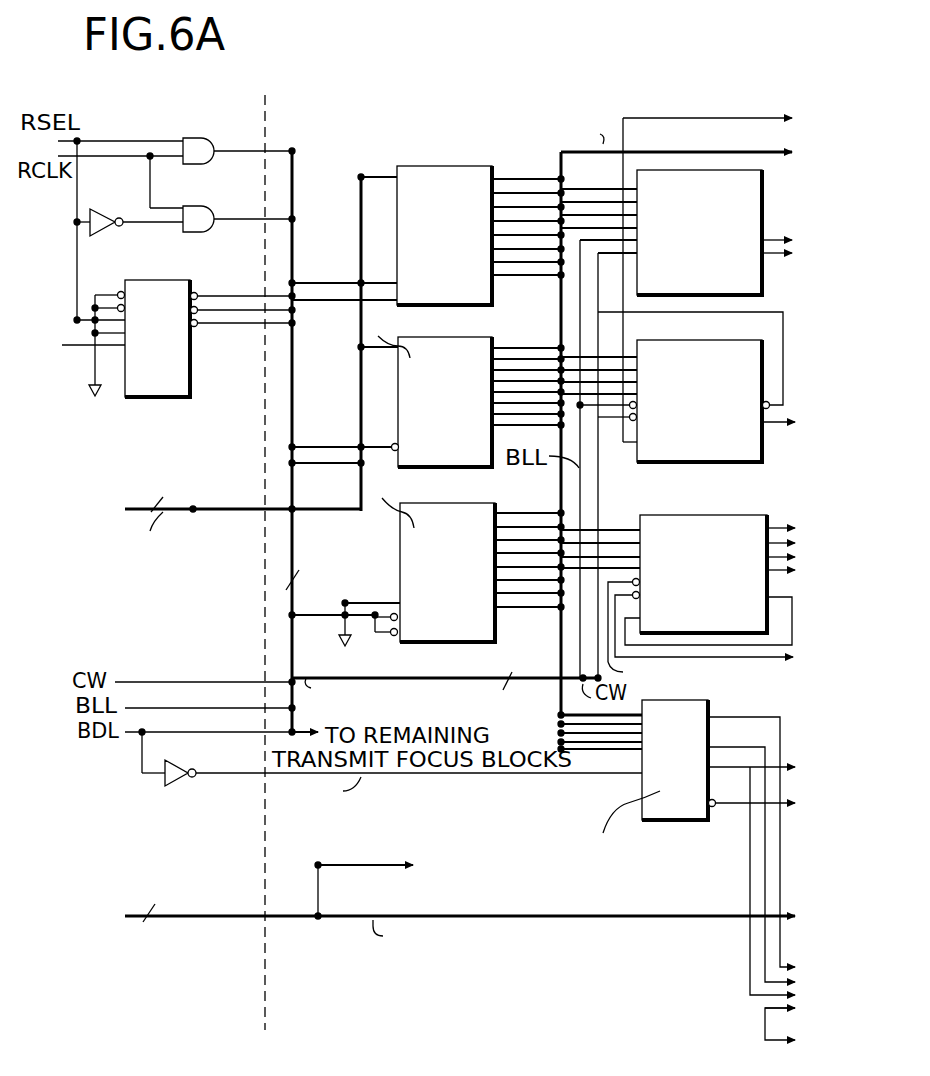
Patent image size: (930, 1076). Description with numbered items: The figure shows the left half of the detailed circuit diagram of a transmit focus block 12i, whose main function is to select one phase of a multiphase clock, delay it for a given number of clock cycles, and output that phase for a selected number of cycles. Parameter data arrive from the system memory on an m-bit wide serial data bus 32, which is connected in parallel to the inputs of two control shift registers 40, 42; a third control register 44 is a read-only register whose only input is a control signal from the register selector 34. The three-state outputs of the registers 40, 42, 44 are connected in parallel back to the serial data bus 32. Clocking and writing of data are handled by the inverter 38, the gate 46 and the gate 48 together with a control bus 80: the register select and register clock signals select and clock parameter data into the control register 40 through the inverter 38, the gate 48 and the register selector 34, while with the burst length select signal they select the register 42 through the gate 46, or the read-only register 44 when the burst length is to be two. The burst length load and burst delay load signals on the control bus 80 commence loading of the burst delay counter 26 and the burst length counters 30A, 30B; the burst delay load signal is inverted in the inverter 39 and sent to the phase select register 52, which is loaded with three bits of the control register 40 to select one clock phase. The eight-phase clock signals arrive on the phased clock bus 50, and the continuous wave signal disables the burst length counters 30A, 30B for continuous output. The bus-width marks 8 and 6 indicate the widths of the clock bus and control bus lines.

The transmit focus block 12i is at (597, 76).
The gate 46 is at (210, 137).
The gate 48 is at (210, 205).
The inverter 38 is at (102, 208).
The register selector 34 is at (175, 376).
The serial data bus 32 is at (258, 508).
The eight-bit bus width 8 is at (460, 703).
The control register 40 is at (431, 176).
The control register 42 is at (412, 393).
The control register 44 is at (417, 574).
The control bus 80 is at (296, 550).
The six-bit bus width 6 is at (412, 630).
The inverter 39 is at (170, 760).
The burst length counter 30A is at (720, 286).
The burst length counter 30B is at (722, 455).
The burst delay counter 26 is at (713, 627).
The phase select register 52 is at (688, 720).
The phased clock bus 50 is at (254, 917).